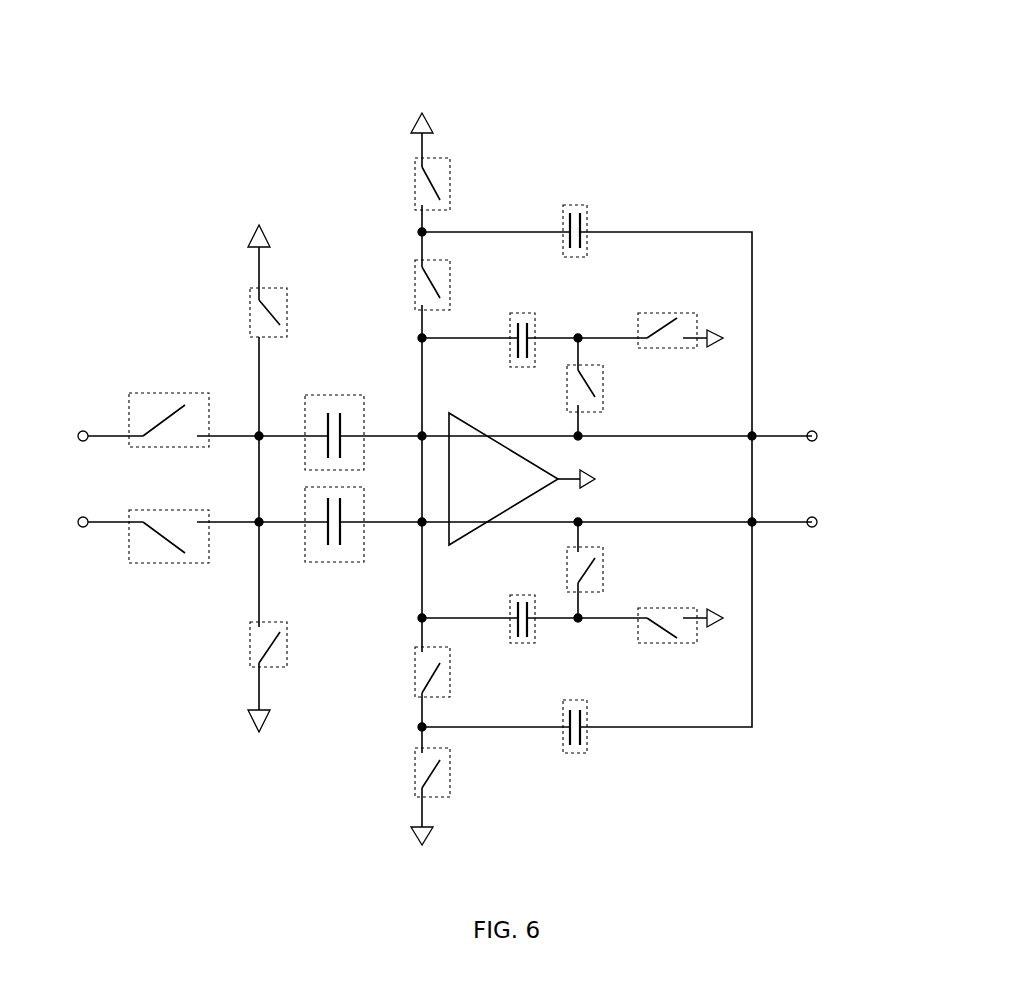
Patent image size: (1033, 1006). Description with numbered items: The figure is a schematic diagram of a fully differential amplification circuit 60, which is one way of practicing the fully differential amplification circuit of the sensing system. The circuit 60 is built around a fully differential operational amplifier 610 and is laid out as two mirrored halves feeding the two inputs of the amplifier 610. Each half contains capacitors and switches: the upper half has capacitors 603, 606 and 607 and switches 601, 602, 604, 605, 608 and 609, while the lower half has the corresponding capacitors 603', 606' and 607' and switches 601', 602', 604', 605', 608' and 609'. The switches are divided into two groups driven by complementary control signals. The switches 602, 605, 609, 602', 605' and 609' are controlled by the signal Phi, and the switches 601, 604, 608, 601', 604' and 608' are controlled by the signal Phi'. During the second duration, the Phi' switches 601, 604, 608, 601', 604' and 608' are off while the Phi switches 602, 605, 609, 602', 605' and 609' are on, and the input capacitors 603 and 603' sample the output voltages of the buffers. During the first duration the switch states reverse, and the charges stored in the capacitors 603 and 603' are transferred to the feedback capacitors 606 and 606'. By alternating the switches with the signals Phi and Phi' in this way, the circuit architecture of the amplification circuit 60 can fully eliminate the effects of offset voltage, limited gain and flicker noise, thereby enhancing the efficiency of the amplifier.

The fully differential amplification circuit 60 is at (673, 87).
The switch 601 is at (169, 384).
The switch 601' is at (169, 574).
The switch 602 is at (229, 310).
The switch 602' is at (229, 651).
The capacitor 603 is at (334, 395).
The capacitor 603' is at (334, 562).
The switch 604 is at (393, 285).
The switch 604' is at (393, 672).
The switch 605 is at (393, 184).
The switch 605' is at (393, 772).
The capacitor 606 is at (522, 305).
The capacitor 606' is at (525, 658).
The capacitor 607 is at (573, 195).
The capacitor 607' is at (576, 764).
The switch 608 is at (667, 296).
The switch 608' is at (667, 665).
The switch 609 is at (625, 388).
The switch 609' is at (627, 569).
The fully differential operational amplifier 610 is at (507, 492).